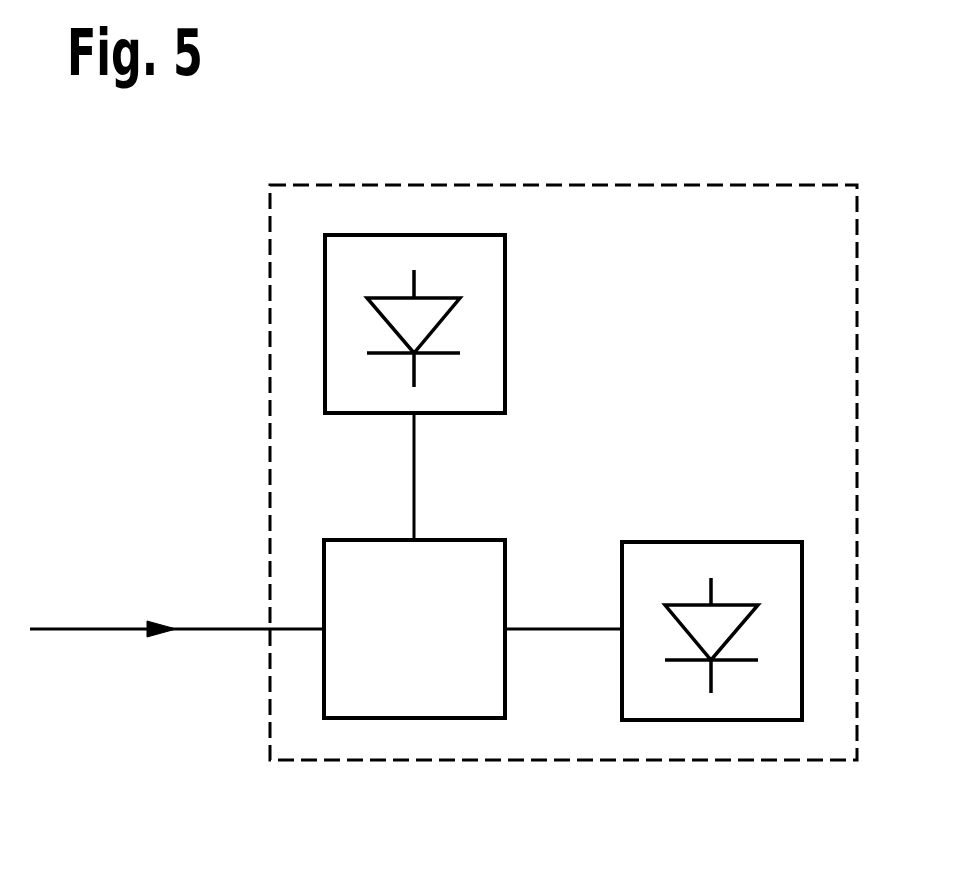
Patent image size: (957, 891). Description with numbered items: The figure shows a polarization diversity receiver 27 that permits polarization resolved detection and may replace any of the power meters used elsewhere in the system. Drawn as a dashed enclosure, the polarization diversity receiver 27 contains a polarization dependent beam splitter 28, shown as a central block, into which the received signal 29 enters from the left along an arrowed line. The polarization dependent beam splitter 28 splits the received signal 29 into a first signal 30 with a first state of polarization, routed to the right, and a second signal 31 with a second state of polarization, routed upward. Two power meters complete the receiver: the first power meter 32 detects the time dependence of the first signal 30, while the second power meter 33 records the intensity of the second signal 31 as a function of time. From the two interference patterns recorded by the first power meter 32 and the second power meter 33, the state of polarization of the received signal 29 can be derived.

The polarization diversity receiver 27 is at (558, 745).
The polarization dependent beam splitter 28 is at (415, 702).
The received signal 29 is at (90, 629).
The first signal 30 is at (565, 628).
The second signal 31 is at (414, 475).
The first power meter 32 is at (710, 703).
The second power meter 33 is at (488, 335).